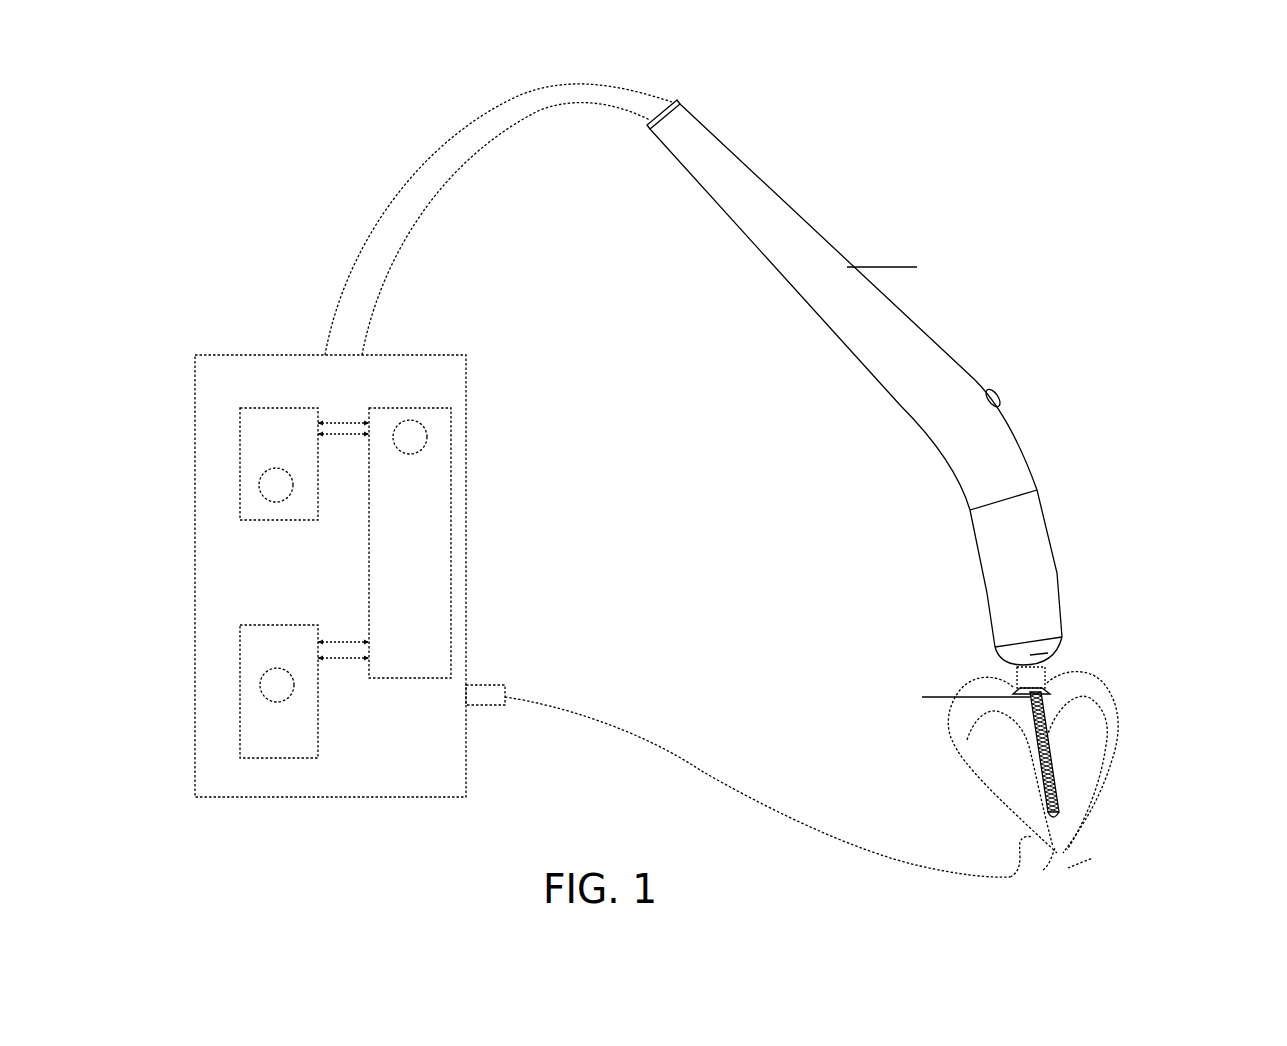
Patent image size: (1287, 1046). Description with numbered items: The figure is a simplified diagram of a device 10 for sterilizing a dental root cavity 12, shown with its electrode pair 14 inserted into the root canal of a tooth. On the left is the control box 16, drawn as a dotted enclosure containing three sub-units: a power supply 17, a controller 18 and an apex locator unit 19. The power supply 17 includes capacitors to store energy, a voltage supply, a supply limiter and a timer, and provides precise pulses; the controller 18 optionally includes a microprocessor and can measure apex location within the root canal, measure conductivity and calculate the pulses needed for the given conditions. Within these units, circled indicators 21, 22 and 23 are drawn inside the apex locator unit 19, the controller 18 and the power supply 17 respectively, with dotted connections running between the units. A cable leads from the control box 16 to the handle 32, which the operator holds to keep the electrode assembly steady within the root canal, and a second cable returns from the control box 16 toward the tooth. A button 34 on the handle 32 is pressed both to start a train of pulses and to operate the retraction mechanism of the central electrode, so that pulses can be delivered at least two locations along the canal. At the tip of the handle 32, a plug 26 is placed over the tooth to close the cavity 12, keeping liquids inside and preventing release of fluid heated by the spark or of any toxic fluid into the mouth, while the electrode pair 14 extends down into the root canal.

The device 10 is at (1027, 360).
The dental root cavity 12 is at (1058, 825).
The electrode pair 14 is at (1043, 735).
The control box 16 is at (236, 362).
The power supply 17 is at (290, 740).
The controller 18 is at (430, 492).
The apex locator unit 19 is at (248, 457).
The apex locator indicator 21 is at (276, 485).
The control indicator 22 is at (410, 437).
The power indicator 23 is at (277, 685).
The plug 26 is at (1045, 678).
The handle 32 is at (842, 338).
The button 34 is at (1003, 405).